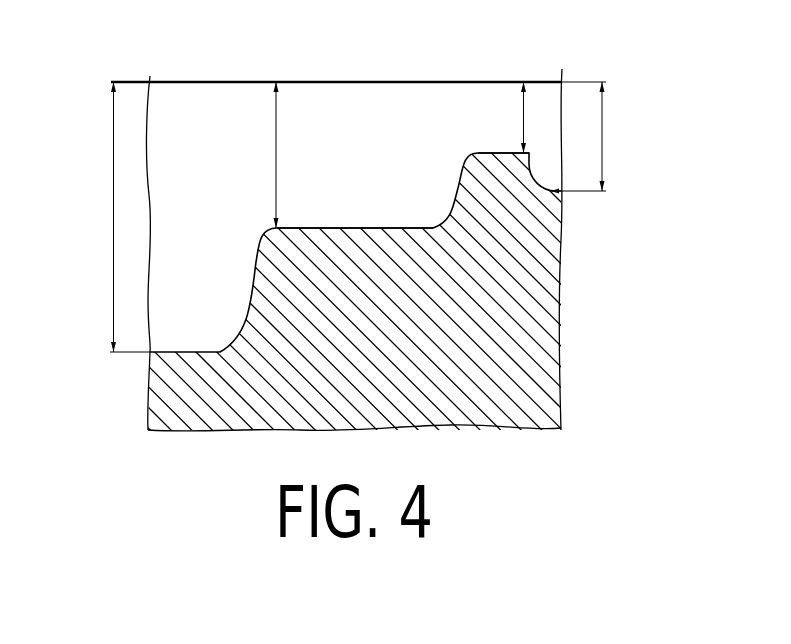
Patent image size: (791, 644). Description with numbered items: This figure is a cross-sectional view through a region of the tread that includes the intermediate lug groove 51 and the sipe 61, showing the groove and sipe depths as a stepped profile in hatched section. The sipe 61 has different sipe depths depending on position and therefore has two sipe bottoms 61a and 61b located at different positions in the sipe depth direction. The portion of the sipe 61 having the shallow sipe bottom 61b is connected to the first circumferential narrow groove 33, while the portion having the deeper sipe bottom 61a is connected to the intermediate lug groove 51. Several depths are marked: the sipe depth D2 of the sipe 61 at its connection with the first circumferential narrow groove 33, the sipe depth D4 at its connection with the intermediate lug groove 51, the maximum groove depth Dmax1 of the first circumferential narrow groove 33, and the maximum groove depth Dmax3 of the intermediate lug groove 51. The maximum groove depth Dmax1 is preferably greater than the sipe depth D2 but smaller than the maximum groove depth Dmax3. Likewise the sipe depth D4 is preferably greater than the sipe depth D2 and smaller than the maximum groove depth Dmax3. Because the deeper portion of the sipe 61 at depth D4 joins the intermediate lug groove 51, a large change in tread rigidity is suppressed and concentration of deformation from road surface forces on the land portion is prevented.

The first circumferential narrow groove 33 is at (541, 90).
The intermediate lug groove 51 is at (207, 77).
The sipe 61 is at (401, 77).
The sipe bottom 61a is at (341, 226).
The sipe bottom 61b is at (497, 150).
The sipe depth D2 is at (513, 117).
The sipe depth D4 is at (291, 155).
The maximum groove depth Dmax1 is at (608, 138).
The maximum groove depth Dmax3 is at (99, 217).